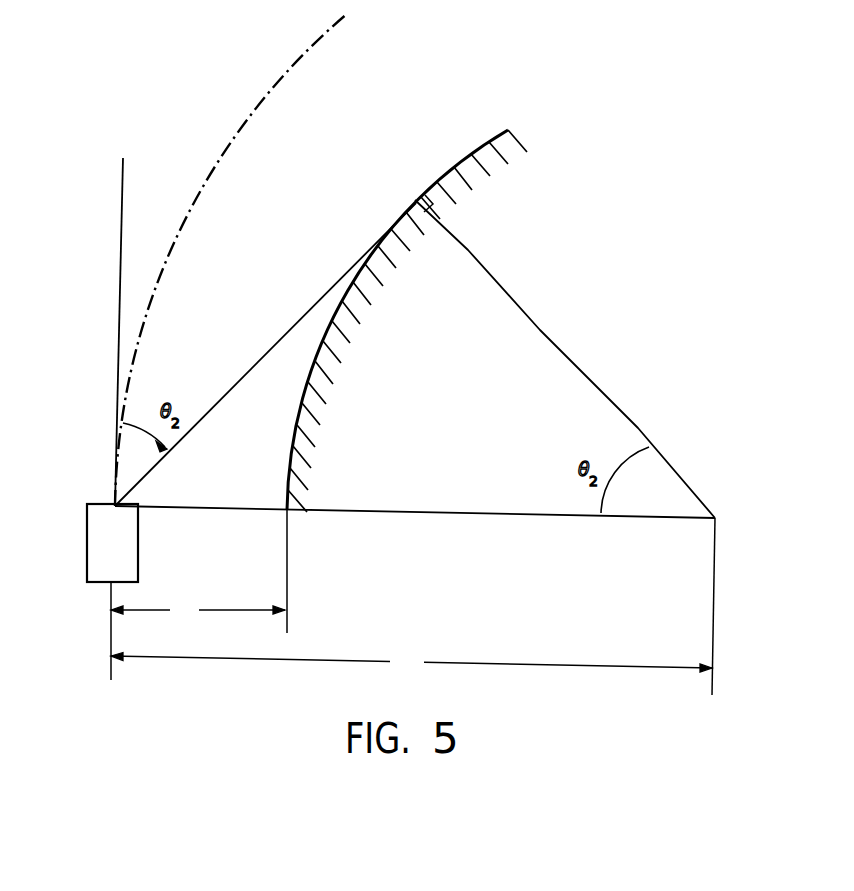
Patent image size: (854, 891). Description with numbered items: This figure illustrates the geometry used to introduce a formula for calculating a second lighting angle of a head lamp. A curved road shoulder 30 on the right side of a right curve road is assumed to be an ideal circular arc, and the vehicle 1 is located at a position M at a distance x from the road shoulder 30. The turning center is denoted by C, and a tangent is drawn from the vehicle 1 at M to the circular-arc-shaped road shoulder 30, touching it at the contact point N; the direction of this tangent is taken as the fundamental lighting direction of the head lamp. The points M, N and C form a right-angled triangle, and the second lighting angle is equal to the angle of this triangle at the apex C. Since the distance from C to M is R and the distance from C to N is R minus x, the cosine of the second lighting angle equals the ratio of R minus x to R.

The vehicle 1 is at (87, 536).
The curved road shoulder 30 is at (456, 163).
The position of the vehicle M is at (102, 332).
The contact point of the tangent and the road shoulder N is at (410, 195).
The turning center C is at (727, 603).
The distance from the vehicle to the road shoulder x is at (199, 595).
The turning radius R is at (411, 663).